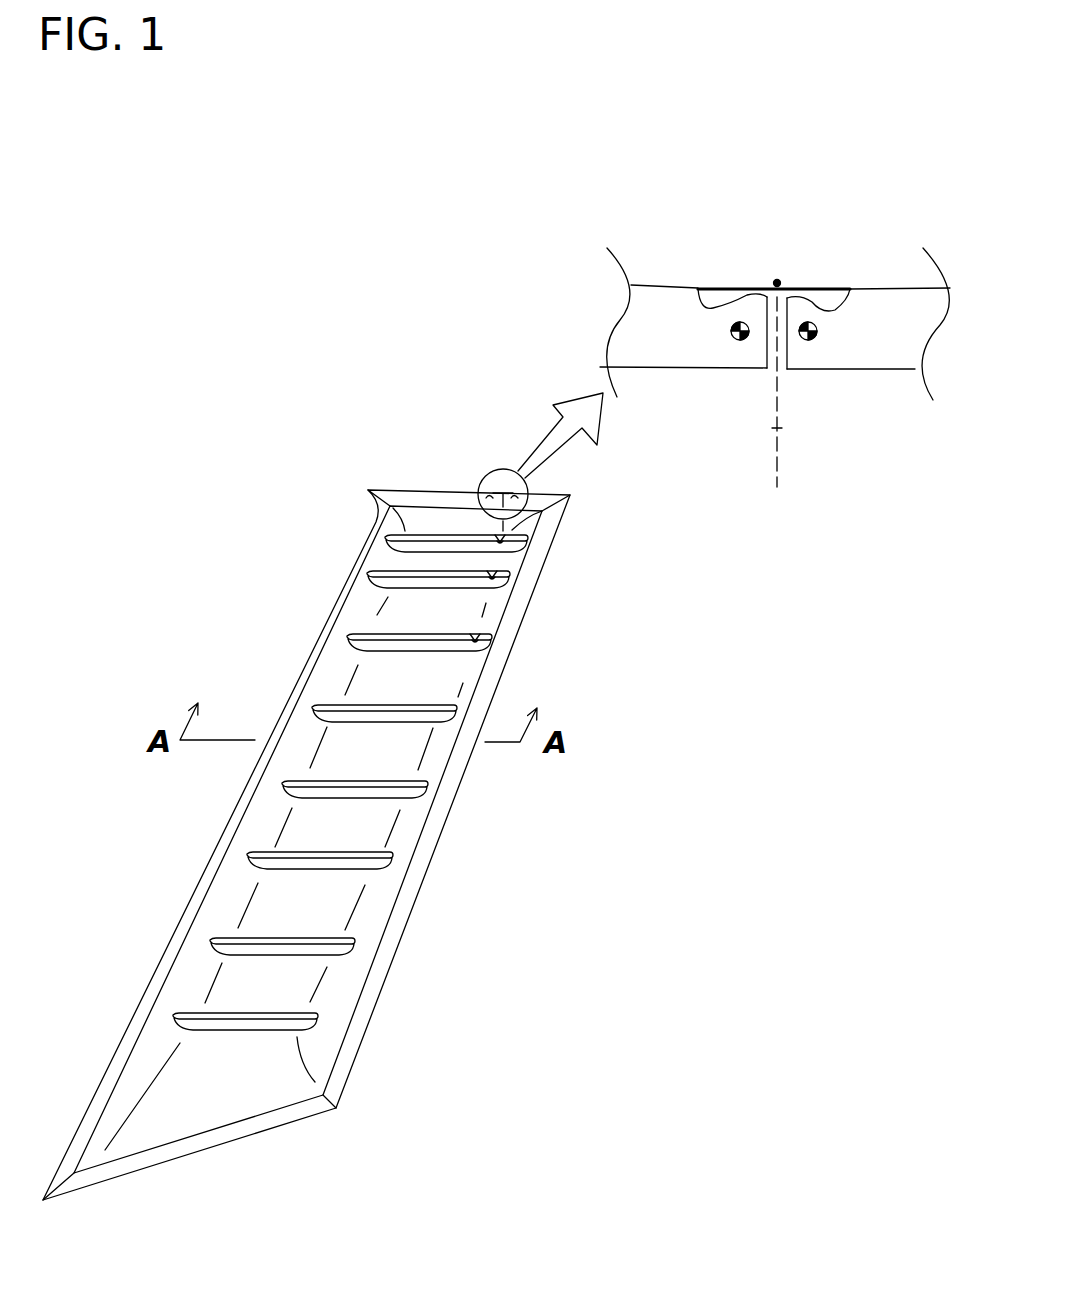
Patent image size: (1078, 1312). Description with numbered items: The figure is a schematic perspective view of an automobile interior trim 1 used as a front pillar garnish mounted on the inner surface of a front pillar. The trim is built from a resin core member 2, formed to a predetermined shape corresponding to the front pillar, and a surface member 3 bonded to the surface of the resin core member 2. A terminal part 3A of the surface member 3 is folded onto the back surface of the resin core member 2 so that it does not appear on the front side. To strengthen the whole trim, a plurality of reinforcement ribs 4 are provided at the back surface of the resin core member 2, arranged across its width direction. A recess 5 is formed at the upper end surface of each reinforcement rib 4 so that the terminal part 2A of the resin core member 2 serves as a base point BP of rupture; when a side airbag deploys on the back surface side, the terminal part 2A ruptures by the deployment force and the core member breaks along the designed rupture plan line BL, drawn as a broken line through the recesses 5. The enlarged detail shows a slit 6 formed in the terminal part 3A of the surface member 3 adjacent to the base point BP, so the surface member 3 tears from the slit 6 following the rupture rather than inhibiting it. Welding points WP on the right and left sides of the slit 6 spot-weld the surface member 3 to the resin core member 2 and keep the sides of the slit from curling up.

The automobile interior trim 1 is at (332, 438).
The resin core member 2 is at (723, 278).
The terminal part of the resin core member 2A is at (820, 288).
The surface member 3 is at (660, 278).
The terminal part of the surface member 3A is at (858, 370).
The reinforcement ribs 4 is at (415, 538).
The recess 5 is at (503, 542).
The slit 6 is at (767, 346).
The base point of rupture BP is at (777, 281).
The rupture plan line BL is at (488, 600).
The welding points WP is at (730, 332).